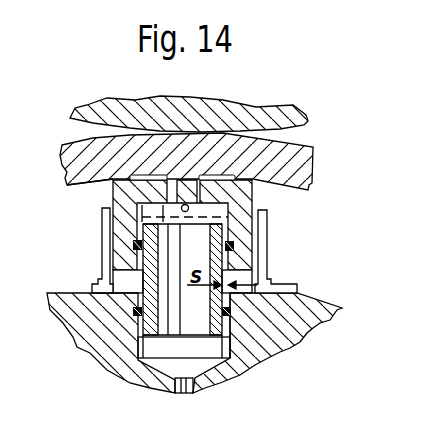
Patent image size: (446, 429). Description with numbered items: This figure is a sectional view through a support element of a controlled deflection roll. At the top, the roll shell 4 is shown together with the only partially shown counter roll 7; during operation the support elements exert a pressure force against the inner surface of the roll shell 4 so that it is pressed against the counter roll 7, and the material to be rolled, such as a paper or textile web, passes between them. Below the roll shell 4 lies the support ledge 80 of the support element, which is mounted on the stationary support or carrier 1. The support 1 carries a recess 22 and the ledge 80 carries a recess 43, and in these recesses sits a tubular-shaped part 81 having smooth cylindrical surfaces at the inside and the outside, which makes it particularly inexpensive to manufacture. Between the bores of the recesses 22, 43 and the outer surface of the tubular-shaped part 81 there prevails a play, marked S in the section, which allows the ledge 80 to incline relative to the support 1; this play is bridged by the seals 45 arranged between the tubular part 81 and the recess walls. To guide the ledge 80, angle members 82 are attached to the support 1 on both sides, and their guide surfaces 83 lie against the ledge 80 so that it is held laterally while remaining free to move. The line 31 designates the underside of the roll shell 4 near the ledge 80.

The support 1 is at (310, 325).
The roll shell 4 is at (78, 164).
The counter roll 7 is at (86, 110).
The recess 22 is at (218, 349).
The underside of plate 31 is at (87, 184).
The recess 43 is at (218, 210).
The seal 45 is at (229, 247).
The support ledge 80 is at (127, 197).
The tubular-shaped part 81 is at (229, 332).
The angle member 82 is at (105, 247).
The guide surface 83 is at (112, 276).